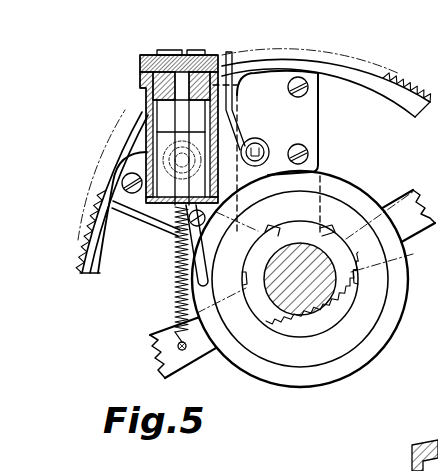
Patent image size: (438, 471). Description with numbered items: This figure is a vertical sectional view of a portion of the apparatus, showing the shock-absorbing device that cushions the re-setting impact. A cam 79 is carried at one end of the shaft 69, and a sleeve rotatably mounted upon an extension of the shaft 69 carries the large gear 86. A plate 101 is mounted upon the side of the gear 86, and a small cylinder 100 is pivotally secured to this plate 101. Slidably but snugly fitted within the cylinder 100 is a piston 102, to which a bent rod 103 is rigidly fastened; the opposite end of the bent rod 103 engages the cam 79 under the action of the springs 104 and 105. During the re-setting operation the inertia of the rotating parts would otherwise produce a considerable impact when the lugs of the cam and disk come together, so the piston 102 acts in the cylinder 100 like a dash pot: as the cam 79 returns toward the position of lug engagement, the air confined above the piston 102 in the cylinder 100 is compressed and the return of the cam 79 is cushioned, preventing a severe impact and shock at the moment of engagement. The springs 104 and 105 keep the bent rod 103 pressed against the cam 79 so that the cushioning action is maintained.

The shaft 69 is at (323, 293).
The cam 79 is at (313, 377).
The large gear 86 is at (378, 90).
The cylinder 100 is at (146, 108).
The plate 101 is at (317, 73).
The piston 102 is at (214, 62).
The bent rod 103 is at (163, 230).
The spring 104 is at (176, 292).
The spring 105 is at (233, 110).